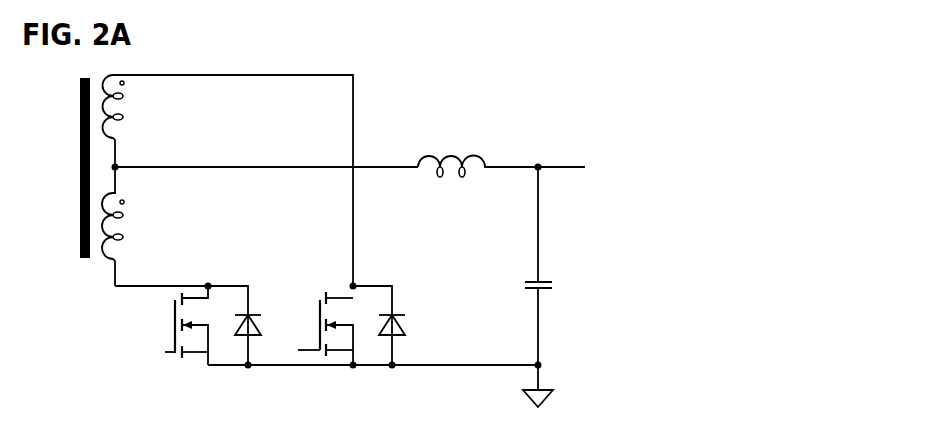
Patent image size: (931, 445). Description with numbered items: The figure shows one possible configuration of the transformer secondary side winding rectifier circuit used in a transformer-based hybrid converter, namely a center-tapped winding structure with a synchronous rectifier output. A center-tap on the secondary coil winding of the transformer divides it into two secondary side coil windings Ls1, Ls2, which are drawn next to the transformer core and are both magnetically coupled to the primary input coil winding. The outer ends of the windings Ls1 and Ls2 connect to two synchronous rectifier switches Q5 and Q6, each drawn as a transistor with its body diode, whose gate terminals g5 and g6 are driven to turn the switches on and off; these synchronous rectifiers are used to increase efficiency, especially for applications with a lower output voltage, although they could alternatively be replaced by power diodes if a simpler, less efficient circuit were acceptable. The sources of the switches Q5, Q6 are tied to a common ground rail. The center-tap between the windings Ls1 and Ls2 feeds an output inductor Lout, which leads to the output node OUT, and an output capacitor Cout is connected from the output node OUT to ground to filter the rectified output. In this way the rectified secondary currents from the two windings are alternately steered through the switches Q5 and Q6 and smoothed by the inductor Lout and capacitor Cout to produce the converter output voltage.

The secondary side coil winding Ls1 is at (131, 121).
The secondary side coil winding Ls2 is at (133, 226).
The output inductor Lout is at (501, 156).
The output capacitor Cout is at (551, 287).
The output node OUT is at (571, 159).
The synchronous rectifier switch Q5 is at (199, 327).
The synchronous rectifier switch Q6 is at (354, 317).
The gate of Q5 g5 is at (161, 352).
The gate of Q6 g6 is at (298, 352).